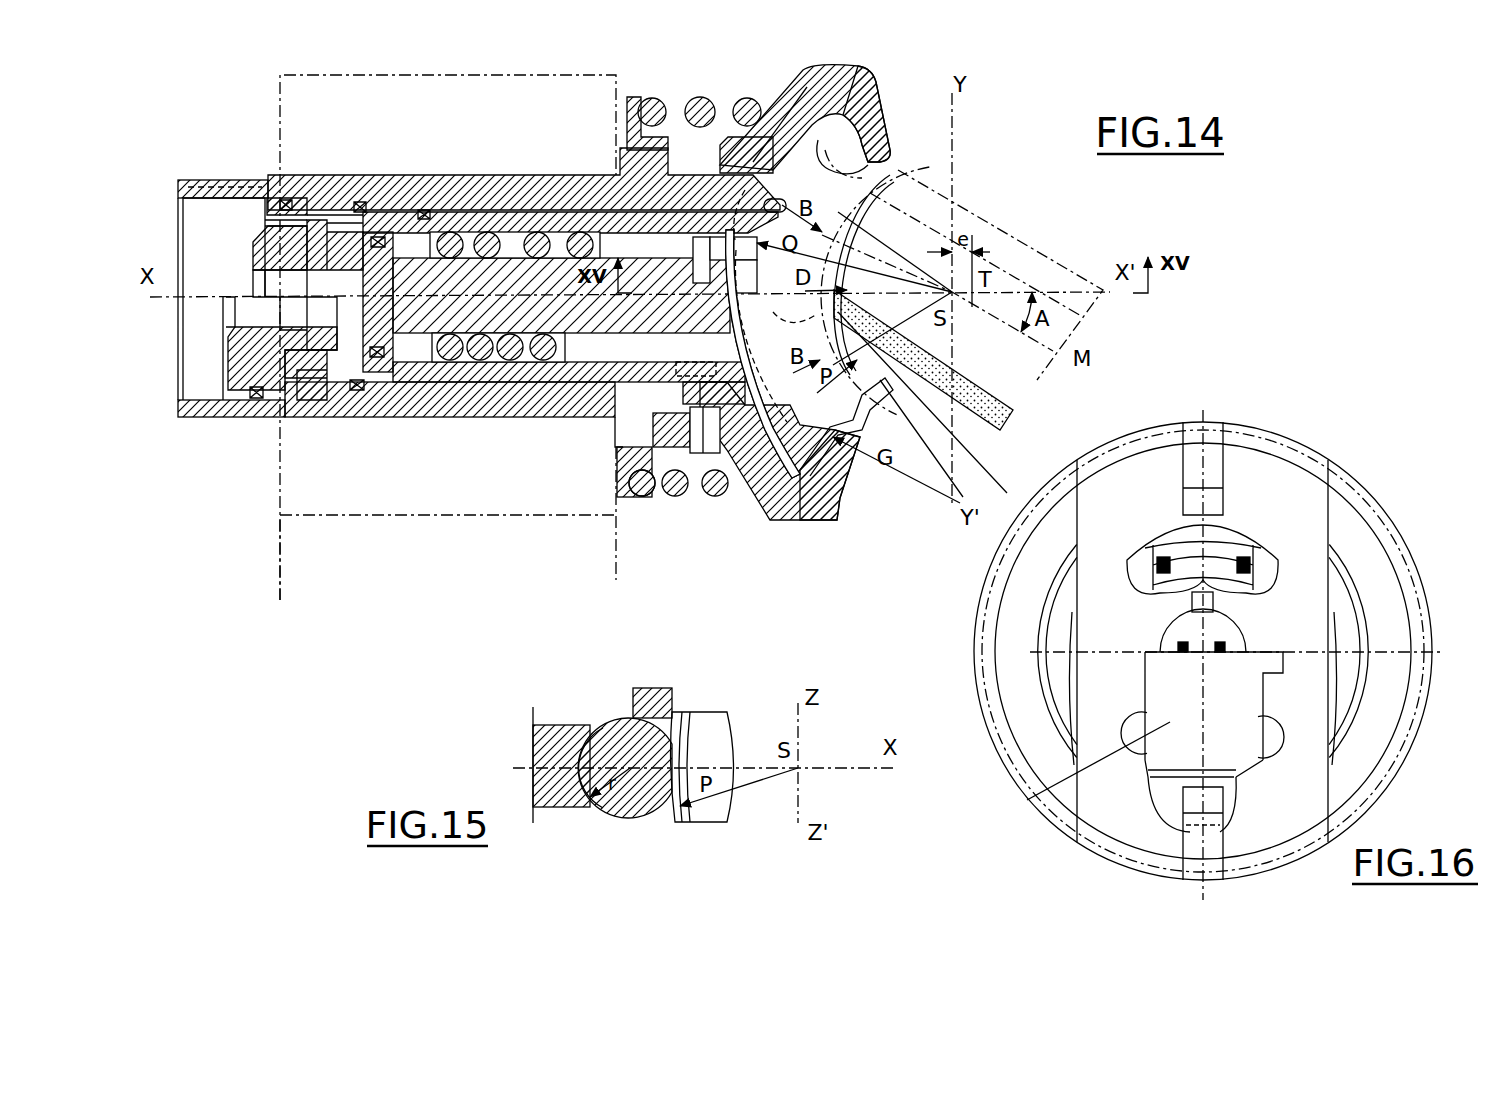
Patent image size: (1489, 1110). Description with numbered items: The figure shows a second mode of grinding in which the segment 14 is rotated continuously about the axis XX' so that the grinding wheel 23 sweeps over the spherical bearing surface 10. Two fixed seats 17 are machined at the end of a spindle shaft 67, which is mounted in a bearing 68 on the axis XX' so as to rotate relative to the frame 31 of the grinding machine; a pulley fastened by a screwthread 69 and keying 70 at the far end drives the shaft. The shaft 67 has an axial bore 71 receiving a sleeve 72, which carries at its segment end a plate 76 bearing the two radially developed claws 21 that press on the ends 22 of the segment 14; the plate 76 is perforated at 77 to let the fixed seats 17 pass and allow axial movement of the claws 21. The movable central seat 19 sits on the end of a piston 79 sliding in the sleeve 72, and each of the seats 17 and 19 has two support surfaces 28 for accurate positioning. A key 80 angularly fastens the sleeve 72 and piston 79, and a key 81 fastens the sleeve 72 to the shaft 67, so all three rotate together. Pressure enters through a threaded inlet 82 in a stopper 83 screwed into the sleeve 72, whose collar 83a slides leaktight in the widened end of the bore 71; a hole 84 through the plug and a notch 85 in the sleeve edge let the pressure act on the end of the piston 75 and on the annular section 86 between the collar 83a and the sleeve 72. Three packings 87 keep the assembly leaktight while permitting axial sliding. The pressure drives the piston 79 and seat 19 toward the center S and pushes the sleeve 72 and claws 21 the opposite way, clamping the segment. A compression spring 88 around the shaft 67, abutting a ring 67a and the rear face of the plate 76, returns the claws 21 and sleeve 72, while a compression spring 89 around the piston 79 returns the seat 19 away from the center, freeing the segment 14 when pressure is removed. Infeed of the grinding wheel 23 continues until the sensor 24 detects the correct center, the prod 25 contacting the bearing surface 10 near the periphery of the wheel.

In FIG. 14, the spherical bearing surface 10 is at (840, 392).
In FIG. 16, the spherical bearing surface 10 is at (1040, 795).
In FIG. 14, the segment 14 is at (775, 508).
In FIG. 15, the segment 14 is at (640, 812).
In FIG. 16, the segment 14 is at (1263, 745).
In FIG. 14, the fixed seats 17 is at (793, 462).
In FIG. 16, the fixed seats 17 is at (1233, 562).
In FIG. 14, the movable central seat 19 is at (683, 392).
In FIG. 15, the movable central seat 19 is at (553, 740).
In FIG. 16, the movable central seat 19 is at (1230, 618).
In FIG. 14, the claws 21 is at (870, 95).
In FIG. 16, the claws 21 is at (1230, 493).
In FIG. 14, the ends of the segment 22 is at (864, 138).
In FIG. 16, the ends of the segment 22 is at (1175, 780).
In FIG. 14, the grinding wheel 23 is at (1008, 410).
In FIG. 14, the sensor 24 is at (934, 462).
In FIG. 14, the prod 25 is at (740, 318).
In FIG. 15, the support surfaces 28 is at (603, 727).
In FIG. 14, the frame 31 is at (280, 556).
In FIG. 14, the spindle shaft 67 is at (448, 176).
In FIG. 14, the ring 67a is at (627, 127).
In FIG. 14, the bearing 68 is at (435, 76).
In FIG. 14, the screwthread 69 is at (203, 180).
In FIG. 14, the keying 70 is at (256, 207).
In FIG. 14, the axial bore 71 is at (585, 212).
In FIG. 14, the sleeve 72 is at (492, 232).
In FIG. 14, the piston 75 is at (378, 372).
In FIG. 14, the plate 76 is at (805, 108).
In FIG. 16, the plate 76 is at (1332, 517).
In FIG. 16, the perforations 77 is at (1270, 572).
In FIG. 14, the piston 79 is at (566, 418).
In FIG. 16, the piston 79 is at (1220, 625).
In FIG. 14, the key 80 is at (696, 238).
In FIG. 16, the key 80 is at (1190, 601).
In FIG. 14, the key 81 is at (698, 488).
In FIG. 14, the threaded inlet 82 is at (282, 317).
In FIG. 14, the stopper 83 is at (225, 352).
In FIG. 14, the collar 83a is at (235, 373).
In FIG. 14, the hole 84 is at (265, 252).
In FIG. 14, the notch 85 is at (268, 212).
In FIG. 14, the annular section 86 is at (262, 410).
In FIG. 14, the packings 87 is at (352, 215).
In FIG. 14, the compression spring 88 is at (713, 105).
In FIG. 14, the compression spring 89 is at (422, 210).